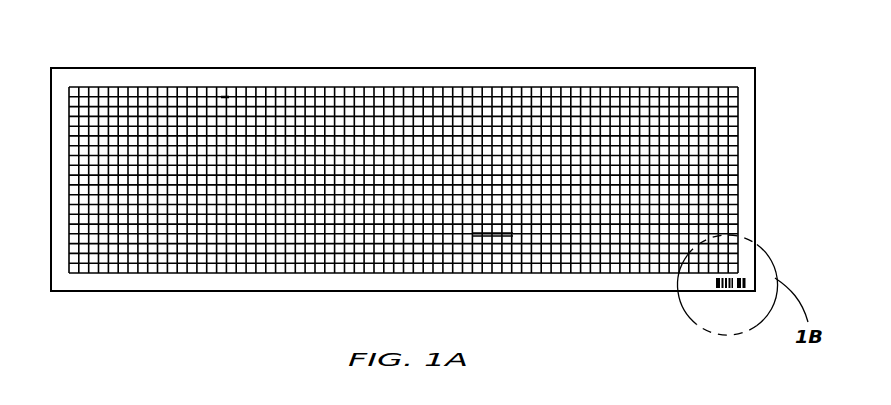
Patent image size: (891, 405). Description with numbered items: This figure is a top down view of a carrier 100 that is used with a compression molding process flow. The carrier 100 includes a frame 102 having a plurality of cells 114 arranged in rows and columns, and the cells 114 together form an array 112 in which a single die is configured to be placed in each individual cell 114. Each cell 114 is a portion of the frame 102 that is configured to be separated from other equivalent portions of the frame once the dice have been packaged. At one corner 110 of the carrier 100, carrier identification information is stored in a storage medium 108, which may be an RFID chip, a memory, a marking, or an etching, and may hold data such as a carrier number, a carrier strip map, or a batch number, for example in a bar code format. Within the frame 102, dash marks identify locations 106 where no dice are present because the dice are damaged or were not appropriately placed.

The carrier 100 is at (748, 92).
The frame 102 is at (698, 82).
The locations where no dice are present 106 is at (226, 96).
The storage medium 108 is at (704, 283).
The corner 110 is at (757, 305).
The array 112 is at (744, 161).
The cells 114 is at (733, 152).